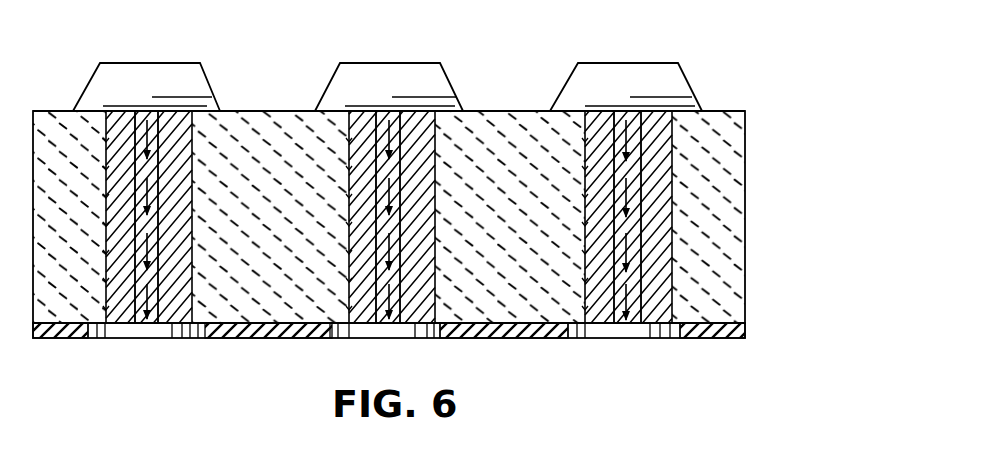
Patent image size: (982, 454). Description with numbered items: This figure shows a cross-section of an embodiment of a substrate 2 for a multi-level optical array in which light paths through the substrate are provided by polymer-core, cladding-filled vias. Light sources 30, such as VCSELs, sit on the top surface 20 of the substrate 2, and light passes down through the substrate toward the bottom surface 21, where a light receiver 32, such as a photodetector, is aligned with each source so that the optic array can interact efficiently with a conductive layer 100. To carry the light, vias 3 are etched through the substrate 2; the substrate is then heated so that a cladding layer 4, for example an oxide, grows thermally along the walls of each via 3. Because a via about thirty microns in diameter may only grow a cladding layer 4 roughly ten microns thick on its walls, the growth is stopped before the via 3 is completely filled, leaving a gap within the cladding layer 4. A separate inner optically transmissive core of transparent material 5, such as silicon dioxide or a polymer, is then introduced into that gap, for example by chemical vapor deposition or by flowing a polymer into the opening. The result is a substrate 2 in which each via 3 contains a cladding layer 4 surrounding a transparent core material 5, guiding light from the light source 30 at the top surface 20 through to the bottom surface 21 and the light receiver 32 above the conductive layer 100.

The substrate 2 is at (745, 205).
The top surface 20 is at (497, 111).
The light source 30 is at (130, 72).
The bottom surface 21 is at (492, 338).
The via 3 is at (593, 283).
The cladding layer 4 is at (605, 297).
The transparent material 5 is at (632, 338).
The light receiver 32 is at (680, 338).
The conductive layer 100 is at (745, 337).